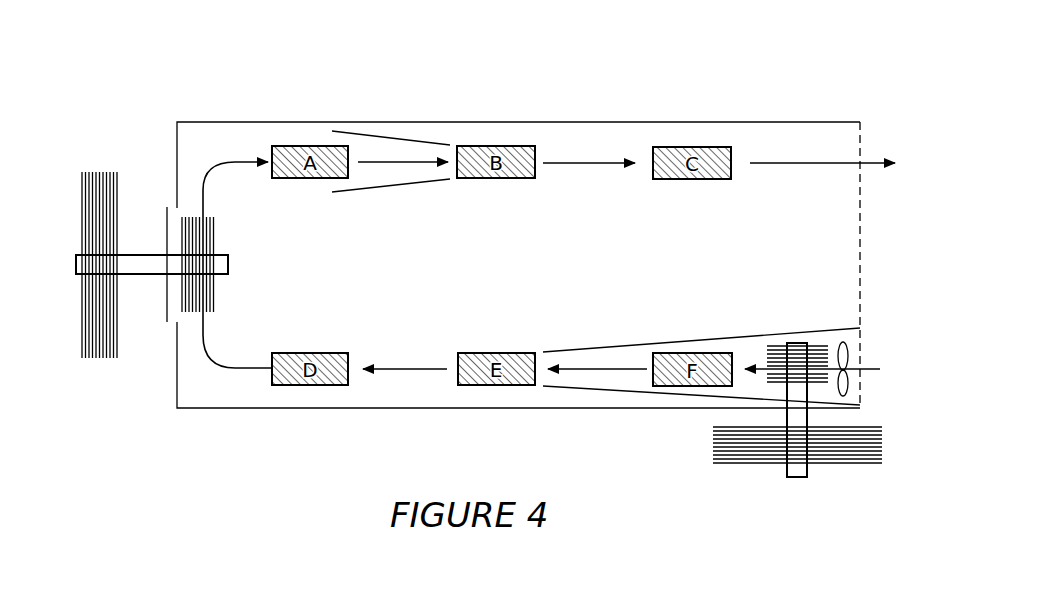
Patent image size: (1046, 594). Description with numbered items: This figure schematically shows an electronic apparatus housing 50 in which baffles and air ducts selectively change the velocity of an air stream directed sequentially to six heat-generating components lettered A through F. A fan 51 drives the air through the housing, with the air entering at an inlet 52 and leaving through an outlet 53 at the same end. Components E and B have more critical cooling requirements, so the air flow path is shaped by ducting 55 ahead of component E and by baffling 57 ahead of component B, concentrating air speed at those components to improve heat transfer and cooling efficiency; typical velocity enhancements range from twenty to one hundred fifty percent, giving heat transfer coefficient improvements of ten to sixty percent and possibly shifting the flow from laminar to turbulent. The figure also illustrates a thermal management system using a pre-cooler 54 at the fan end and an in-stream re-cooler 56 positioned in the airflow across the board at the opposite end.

The housing 50 is at (818, 122).
The fan 51 is at (852, 350).
The air inlet 52 is at (863, 388).
The air outlet 53 is at (862, 140).
The pre-cooler 54 is at (807, 469).
The ducting 55 is at (640, 397).
The in-stream re-cooler 56 is at (146, 270).
The baffling 57 is at (400, 186).